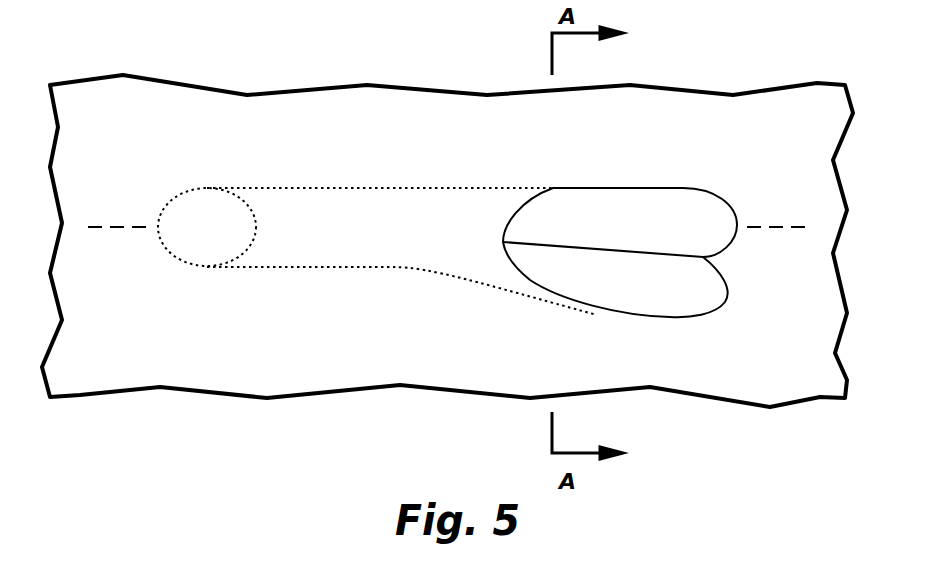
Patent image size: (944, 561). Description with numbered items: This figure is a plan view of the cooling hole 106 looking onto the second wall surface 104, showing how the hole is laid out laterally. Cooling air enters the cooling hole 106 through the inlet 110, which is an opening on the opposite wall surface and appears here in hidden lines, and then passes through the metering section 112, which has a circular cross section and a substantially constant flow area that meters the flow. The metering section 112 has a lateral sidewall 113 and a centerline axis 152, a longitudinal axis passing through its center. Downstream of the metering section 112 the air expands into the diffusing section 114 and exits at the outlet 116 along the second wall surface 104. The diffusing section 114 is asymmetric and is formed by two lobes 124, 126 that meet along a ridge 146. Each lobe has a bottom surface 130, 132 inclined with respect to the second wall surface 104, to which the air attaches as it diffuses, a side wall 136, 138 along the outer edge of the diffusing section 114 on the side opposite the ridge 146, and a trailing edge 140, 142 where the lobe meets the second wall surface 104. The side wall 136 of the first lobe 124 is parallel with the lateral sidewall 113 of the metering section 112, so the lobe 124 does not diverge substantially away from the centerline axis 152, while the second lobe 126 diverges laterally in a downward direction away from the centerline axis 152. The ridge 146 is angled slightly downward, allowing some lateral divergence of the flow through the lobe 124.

The second wall surface 104 is at (121, 118).
The cooling hole 106 is at (568, 203).
The inlet 110 is at (208, 237).
The metering section 112 is at (335, 235).
The lateral sidewall 113 is at (408, 190).
The diffusing section 114 is at (594, 292).
The outlet 116 is at (698, 190).
The lobe 124 is at (640, 207).
The lobe 126 is at (660, 307).
The bottom surface 130 is at (718, 238).
The bottom surface 132 is at (718, 298).
The side wall 136 is at (608, 188).
The side wall 138 is at (618, 318).
The trailing edge 140 is at (737, 218).
The trailing edge 142 is at (727, 302).
The ridge 146 is at (620, 247).
The centerline axis 152 is at (120, 224).